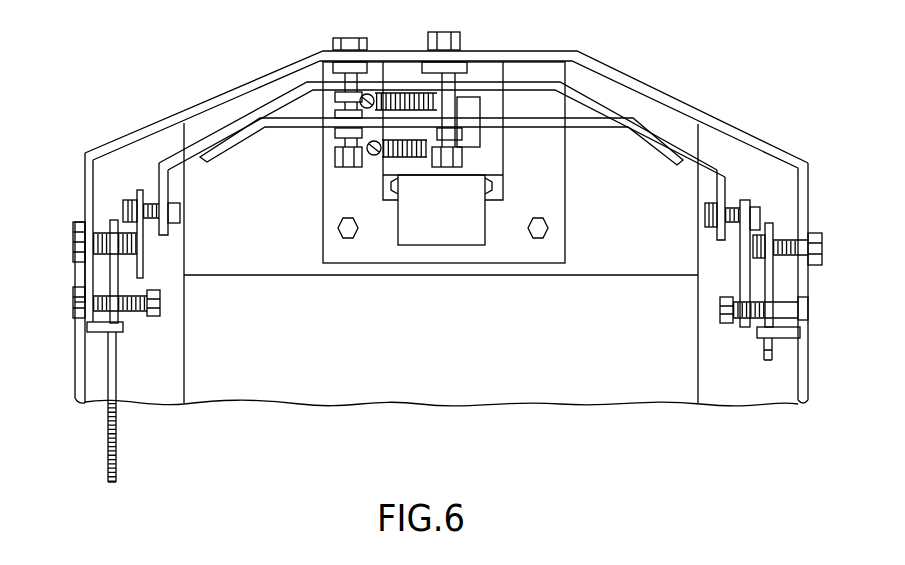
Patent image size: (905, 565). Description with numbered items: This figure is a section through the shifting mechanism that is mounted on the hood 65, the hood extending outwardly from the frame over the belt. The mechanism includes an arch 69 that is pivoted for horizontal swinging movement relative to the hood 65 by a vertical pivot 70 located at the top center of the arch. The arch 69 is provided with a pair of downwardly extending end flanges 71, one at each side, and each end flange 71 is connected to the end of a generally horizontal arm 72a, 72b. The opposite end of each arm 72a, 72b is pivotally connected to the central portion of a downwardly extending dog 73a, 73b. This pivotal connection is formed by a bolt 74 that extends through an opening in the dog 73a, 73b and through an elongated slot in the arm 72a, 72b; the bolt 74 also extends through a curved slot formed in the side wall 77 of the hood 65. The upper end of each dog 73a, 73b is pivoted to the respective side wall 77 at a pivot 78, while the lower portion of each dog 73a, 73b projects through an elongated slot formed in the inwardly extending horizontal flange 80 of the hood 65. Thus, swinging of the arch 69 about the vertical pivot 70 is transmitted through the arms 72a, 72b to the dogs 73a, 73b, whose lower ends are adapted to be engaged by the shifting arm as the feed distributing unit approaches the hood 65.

The hood 65 is at (692, 110).
The arch 69 is at (237, 120).
The vertical pivot 70 is at (447, 100).
The end flange 71 is at (162, 180).
The arm 72a is at (745, 263).
The arm 72b is at (140, 253).
The dog 73a is at (767, 361).
The dog 73b is at (115, 358).
The bolt 74 is at (160, 303).
The side wall 77 is at (85, 192).
The pivot 78 is at (77, 242).
The horizontal flange 80 is at (100, 332).